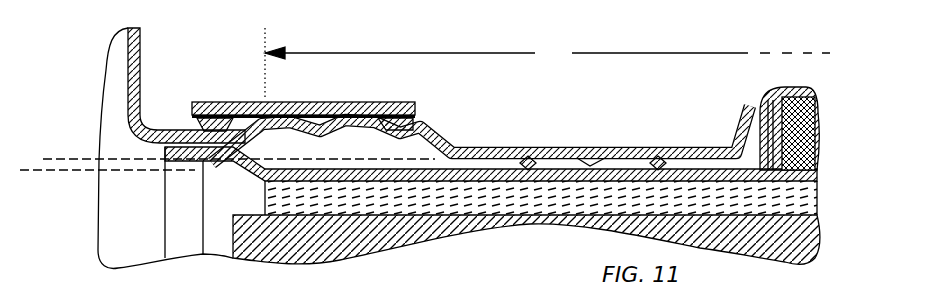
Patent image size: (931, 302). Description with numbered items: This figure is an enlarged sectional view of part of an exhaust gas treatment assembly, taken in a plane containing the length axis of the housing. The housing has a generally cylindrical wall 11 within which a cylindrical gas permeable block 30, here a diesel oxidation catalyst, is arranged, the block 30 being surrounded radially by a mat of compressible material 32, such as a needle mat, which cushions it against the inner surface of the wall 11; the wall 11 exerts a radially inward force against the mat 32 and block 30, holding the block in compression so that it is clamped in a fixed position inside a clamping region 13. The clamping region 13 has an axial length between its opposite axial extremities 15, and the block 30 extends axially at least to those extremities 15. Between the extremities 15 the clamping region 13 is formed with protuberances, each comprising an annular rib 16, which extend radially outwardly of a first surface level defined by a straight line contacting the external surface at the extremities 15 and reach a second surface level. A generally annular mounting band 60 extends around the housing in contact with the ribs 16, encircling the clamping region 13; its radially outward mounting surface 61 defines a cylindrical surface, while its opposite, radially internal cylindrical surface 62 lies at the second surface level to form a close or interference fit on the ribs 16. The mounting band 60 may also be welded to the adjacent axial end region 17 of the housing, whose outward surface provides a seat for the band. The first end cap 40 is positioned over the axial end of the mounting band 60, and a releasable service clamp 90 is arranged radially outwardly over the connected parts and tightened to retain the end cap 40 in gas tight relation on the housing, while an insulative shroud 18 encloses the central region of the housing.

The wall 11 is at (812, 176).
The clamping region 13 is at (673, 93).
The axial extremity 15 is at (268, 86).
The annular rib 16 is at (665, 146).
The axial end region 17 is at (212, 250).
The insulative shroud 18 is at (815, 100).
The gas permeable block 30 is at (355, 260).
The mat of compressible material 32 is at (814, 192).
The first end cap 40 is at (141, 34).
The mounting band 60 is at (440, 136).
The mounting surface 61 is at (533, 146).
The radially internal cylindrical surface 62 is at (597, 147).
The releasable service clamp 90 is at (237, 102).